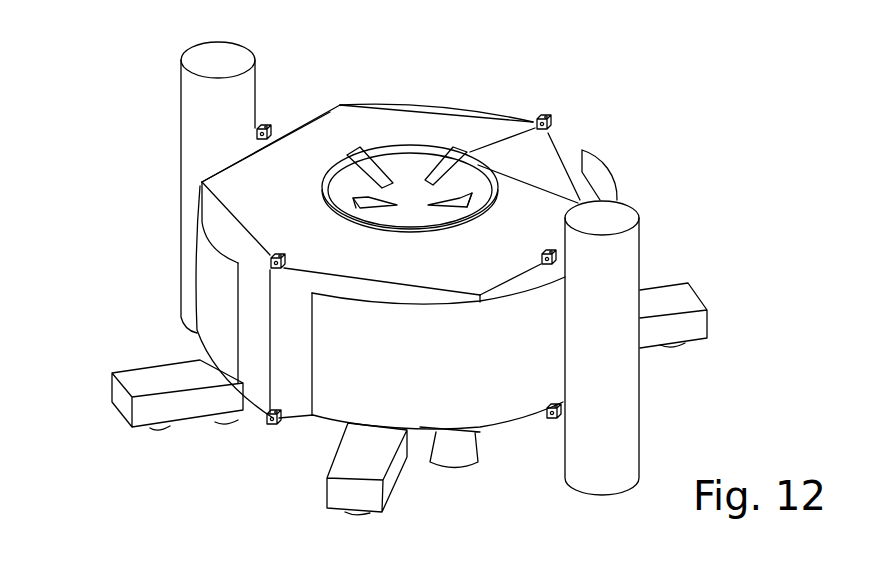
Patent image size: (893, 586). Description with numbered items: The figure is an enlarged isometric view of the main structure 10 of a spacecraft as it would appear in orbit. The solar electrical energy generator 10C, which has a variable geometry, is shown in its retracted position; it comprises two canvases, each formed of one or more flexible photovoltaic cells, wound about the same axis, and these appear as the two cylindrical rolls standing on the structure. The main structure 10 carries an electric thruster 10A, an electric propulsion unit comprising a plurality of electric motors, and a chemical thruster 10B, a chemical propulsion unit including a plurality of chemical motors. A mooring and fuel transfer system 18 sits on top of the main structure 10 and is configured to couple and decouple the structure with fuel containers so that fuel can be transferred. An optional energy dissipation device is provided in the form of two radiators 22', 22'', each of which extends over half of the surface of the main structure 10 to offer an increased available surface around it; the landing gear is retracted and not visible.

The main structure 10 is at (452, 88).
The mooring and fuel transfer system 18 is at (462, 152).
The electric thruster 10A is at (130, 373).
The chemical thruster 10B is at (457, 457).
The solar electrical energy generator 10C is at (187, 115).
The radiator 22' is at (148, 268).
The radiator 22'' is at (510, 434).